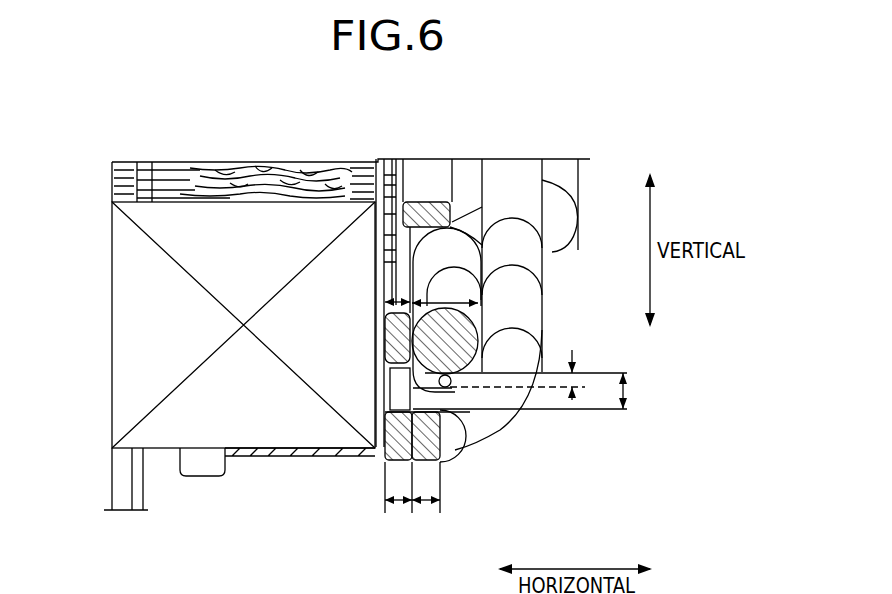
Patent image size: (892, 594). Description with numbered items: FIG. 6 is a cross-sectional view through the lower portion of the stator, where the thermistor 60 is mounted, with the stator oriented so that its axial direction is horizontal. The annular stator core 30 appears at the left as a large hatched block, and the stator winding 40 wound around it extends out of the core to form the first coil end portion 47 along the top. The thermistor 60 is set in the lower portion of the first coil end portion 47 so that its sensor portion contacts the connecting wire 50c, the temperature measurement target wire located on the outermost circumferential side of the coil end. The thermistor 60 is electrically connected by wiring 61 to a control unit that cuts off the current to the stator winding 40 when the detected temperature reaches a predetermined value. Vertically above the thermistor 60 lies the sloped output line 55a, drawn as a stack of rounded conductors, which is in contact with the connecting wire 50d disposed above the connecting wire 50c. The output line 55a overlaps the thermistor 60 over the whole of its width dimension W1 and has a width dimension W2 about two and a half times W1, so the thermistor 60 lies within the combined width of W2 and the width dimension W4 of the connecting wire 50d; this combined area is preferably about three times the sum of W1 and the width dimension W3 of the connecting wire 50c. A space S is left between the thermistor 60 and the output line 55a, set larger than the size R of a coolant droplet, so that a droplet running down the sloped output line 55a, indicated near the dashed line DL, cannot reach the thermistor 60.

The stator core 30 is at (117, 518).
The stator winding 40 is at (190, 156).
The first coil end portion 47 is at (302, 156).
The connecting wire 50c is at (392, 428).
The connecting wire 50d is at (392, 338).
The output line 55a is at (455, 260).
The thermistor 60 is at (448, 415).
The wiring 61 is at (523, 300).
The design line DL is at (451, 385).
The size of a droplet R is at (572, 362).
The space S is at (631, 391).
The width dimension W1 is at (423, 505).
The width dimension W2 is at (445, 293).
The width dimension W3 is at (397, 505).
The width dimension W4 is at (390, 302).